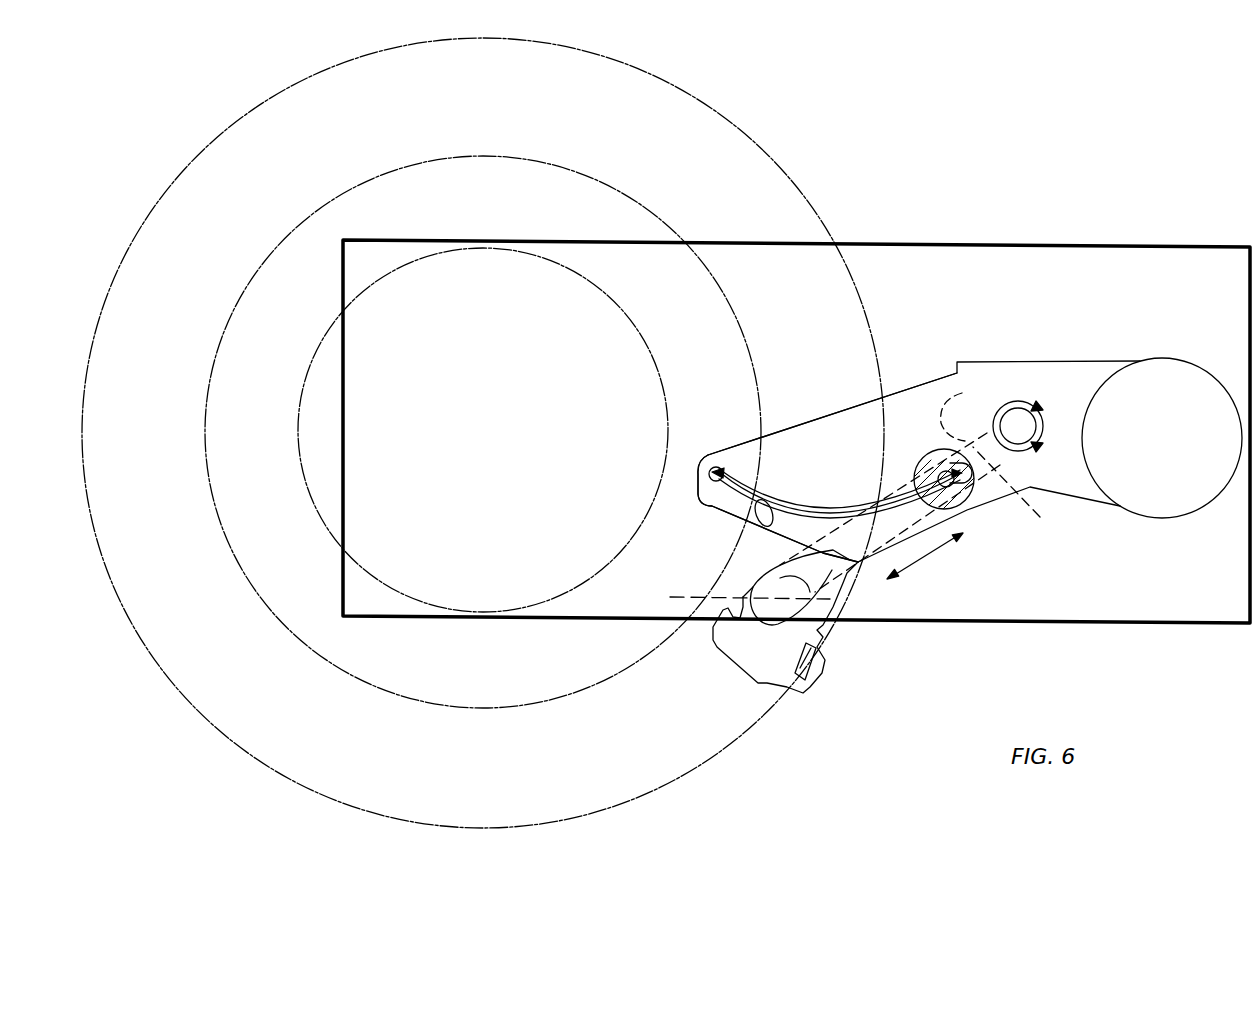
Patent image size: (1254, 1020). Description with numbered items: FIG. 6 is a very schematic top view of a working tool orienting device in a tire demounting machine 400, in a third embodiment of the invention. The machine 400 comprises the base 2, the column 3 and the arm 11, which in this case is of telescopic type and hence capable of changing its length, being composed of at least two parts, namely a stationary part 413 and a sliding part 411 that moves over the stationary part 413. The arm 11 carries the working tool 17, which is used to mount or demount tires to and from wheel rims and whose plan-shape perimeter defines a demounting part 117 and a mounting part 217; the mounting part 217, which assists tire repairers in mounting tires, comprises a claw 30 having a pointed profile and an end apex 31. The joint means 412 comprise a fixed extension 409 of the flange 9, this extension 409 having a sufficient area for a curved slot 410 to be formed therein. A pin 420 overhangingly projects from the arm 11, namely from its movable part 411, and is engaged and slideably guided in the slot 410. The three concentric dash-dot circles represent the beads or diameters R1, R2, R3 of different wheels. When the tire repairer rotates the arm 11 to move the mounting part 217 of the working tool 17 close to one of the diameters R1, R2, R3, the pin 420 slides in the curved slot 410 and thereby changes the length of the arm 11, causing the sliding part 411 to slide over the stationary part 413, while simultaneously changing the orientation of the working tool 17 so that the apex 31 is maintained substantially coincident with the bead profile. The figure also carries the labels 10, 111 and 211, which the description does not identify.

The tire demounting machine 400 is at (1095, 230).
The base 2 is at (913, 246).
The column 3 is at (1160, 412).
The flange 9 is at (1058, 386).
The pivot shaft 10 is at (1018, 396).
The arm 11 is at (893, 466).
The working tool 17 is at (715, 673).
The demounting part 117 is at (806, 706).
The claw 30 is at (843, 553).
The end apex 31 is at (860, 536).
The fixed extension of the flange 409 is at (900, 428).
The curved slot 410 is at (760, 472).
The sliding part 411 is at (730, 596).
The joint means 412 is at (685, 499).
The stationary part 413 is at (992, 413).
The pin 420 is at (970, 507).
The reference line 111 is at (937, 512).
The cam roller 211 is at (760, 567).
The mounting part 217 is at (866, 601).
The bead R1 is at (663, 385).
The bead R2 is at (750, 351).
The bead R3 is at (863, 314).